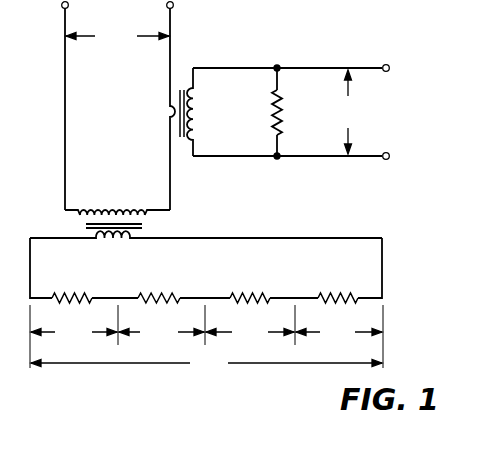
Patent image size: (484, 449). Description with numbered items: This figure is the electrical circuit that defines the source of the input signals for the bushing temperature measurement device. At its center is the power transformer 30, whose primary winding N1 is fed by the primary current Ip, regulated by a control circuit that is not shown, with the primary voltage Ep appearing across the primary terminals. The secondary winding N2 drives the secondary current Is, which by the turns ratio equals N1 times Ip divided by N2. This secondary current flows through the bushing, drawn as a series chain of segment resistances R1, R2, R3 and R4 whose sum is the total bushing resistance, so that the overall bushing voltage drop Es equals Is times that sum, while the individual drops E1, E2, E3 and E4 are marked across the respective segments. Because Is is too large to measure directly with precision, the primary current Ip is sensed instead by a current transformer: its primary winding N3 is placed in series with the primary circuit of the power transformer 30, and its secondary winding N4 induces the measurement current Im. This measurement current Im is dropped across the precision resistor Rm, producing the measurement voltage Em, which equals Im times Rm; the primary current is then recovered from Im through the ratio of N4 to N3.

The power transformer 30 is at (132, 225).
The primary winding N1 is at (117, 198).
The secondary winding N2 is at (113, 250).
The current transformer primary winding N3 is at (155, 109).
The current transformer secondary winding N4 is at (207, 112).
The bushing segment resistance R1 is at (71, 285).
The bushing segment resistance R2 is at (159, 285).
The bushing segment resistance R3 is at (250, 281).
The bushing segment resistance R4 is at (338, 282).
The precision resistor Rm is at (293, 112).
The primary voltage Ep is at (117, 38).
The primary current Ip is at (65, 118).
The measurement current Im is at (217, 156).
The measurement voltage Em is at (352, 112).
The secondary current Is is at (266, 238).
The voltage across R1 E1 is at (74, 334).
The voltage across R2 E2 is at (161, 334).
The voltage across R3 E3 is at (250, 334).
The voltage across R4 E4 is at (339, 334).
The bushing voltage drop Es is at (206, 366).